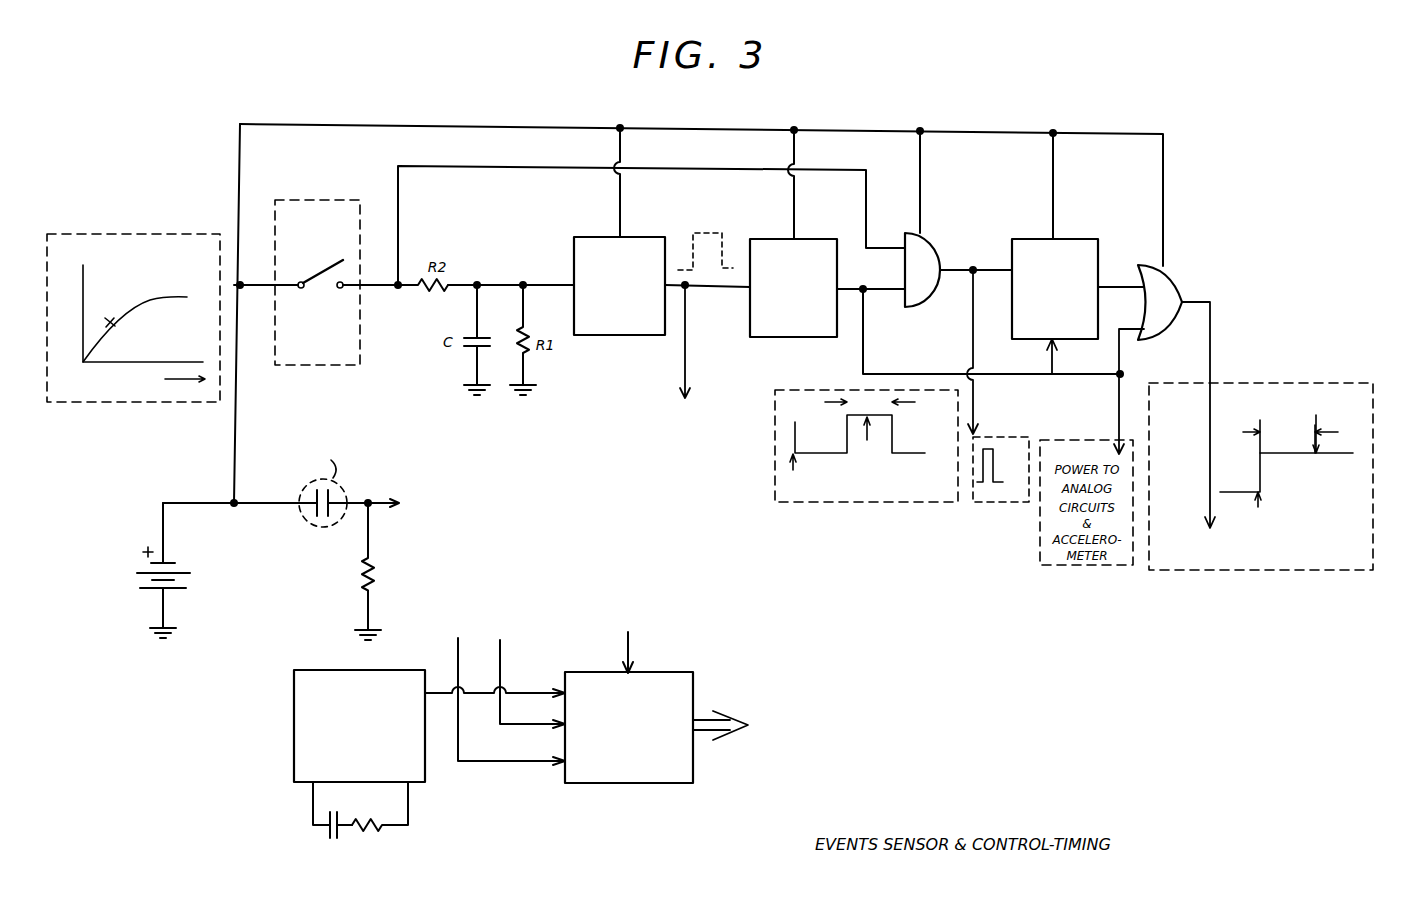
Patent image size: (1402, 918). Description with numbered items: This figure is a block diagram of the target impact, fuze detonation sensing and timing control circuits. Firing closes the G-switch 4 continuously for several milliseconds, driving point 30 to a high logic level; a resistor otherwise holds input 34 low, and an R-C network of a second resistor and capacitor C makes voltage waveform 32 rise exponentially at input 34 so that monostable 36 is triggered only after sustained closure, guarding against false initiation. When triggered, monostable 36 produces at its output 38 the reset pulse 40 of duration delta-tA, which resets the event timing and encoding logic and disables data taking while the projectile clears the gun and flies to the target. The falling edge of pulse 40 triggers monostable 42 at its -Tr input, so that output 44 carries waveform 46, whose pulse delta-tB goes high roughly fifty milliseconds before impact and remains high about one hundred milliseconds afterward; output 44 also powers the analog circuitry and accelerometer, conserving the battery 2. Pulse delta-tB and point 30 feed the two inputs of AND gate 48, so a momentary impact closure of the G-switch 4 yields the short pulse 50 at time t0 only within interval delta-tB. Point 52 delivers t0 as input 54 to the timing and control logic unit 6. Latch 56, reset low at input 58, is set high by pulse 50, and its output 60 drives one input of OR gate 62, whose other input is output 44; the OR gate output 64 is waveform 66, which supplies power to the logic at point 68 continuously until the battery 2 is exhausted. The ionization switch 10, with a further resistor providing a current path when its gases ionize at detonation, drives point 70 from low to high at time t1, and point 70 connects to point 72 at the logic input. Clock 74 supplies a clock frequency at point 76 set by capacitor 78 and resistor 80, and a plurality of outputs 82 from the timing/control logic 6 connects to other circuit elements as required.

The battery 2 is at (150, 540).
The G-switch 4 is at (275, 366).
The timing and control logic unit 6 is at (638, 784).
The ionization switch 10 is at (345, 491).
The point 30 is at (380, 288).
The voltage waveform 32 is at (143, 233).
The input 34 is at (536, 282).
The monostable 36 is at (609, 337).
The output 38 is at (677, 292).
The reset pulse 40 is at (722, 241).
The monostable 42 is at (793, 339).
The output 44 is at (852, 293).
The waveform 46 is at (870, 503).
The AND gate 48 is at (919, 308).
The pulse 50 is at (986, 503).
The point 52 is at (974, 270).
The input 54 is at (506, 727).
The latch 56 is at (1086, 240).
The reset input 58 is at (1070, 376).
The output 60 is at (1122, 287).
The OR gate 62 is at (1182, 297).
The output 64 is at (1213, 341).
The waveform 66 is at (1301, 385).
The point 68 is at (630, 640).
The point 70 is at (386, 500).
The point 72 is at (506, 765).
The clock 74 is at (294, 725).
The point 76 is at (528, 693).
The capacitor 78 is at (322, 832).
The resistor 80 is at (368, 836).
The outputs 82 is at (714, 718).